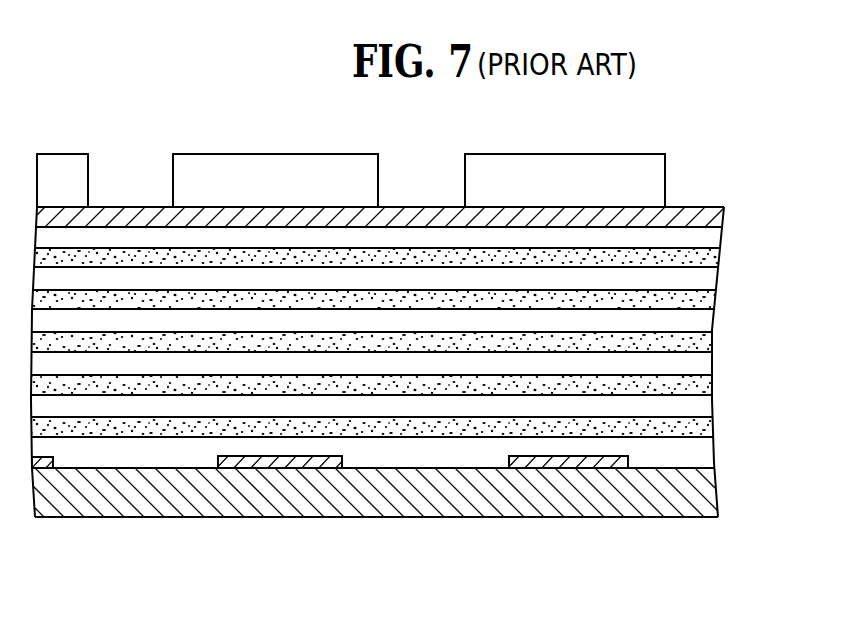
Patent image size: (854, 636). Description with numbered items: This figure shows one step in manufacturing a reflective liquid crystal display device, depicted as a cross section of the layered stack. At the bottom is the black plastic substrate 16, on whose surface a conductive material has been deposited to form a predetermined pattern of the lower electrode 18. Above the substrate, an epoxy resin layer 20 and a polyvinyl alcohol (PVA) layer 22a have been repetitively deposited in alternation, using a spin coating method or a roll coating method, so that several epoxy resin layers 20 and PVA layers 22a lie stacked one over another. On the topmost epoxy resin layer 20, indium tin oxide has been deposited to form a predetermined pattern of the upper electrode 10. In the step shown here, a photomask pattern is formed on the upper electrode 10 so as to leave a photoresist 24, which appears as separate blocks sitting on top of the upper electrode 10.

The photoresist 24 is at (267, 183).
The upper electrode 10 is at (333, 217).
The epoxy resin layer 20 is at (703, 232).
The polyvinyl alcohol (PVA) layer 22a is at (700, 308).
The lower electrode 18 is at (258, 460).
The black plastic substrate 16 is at (667, 507).